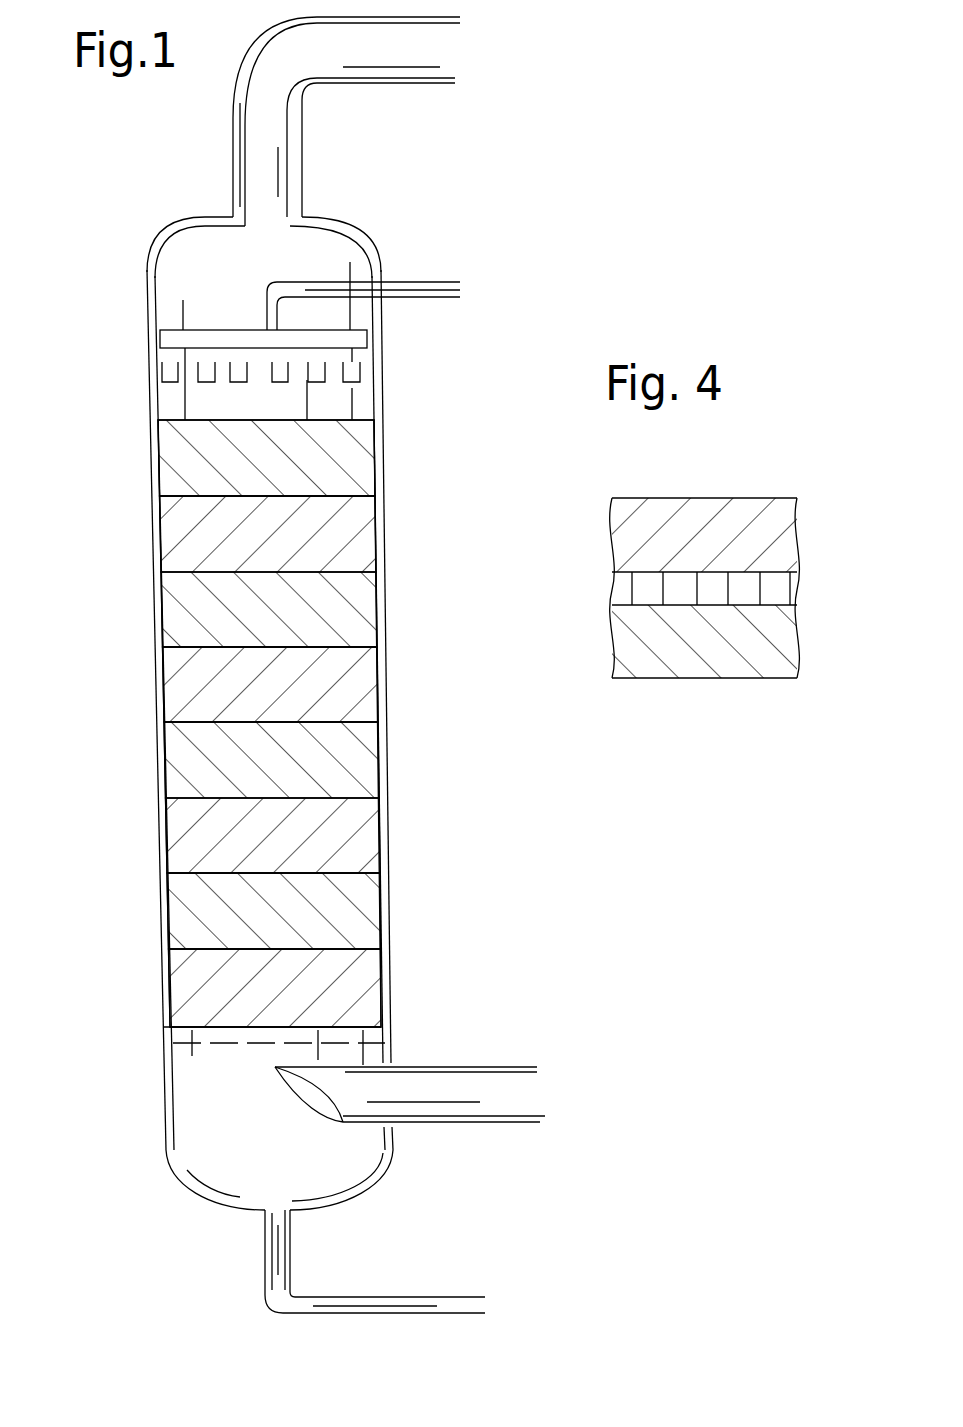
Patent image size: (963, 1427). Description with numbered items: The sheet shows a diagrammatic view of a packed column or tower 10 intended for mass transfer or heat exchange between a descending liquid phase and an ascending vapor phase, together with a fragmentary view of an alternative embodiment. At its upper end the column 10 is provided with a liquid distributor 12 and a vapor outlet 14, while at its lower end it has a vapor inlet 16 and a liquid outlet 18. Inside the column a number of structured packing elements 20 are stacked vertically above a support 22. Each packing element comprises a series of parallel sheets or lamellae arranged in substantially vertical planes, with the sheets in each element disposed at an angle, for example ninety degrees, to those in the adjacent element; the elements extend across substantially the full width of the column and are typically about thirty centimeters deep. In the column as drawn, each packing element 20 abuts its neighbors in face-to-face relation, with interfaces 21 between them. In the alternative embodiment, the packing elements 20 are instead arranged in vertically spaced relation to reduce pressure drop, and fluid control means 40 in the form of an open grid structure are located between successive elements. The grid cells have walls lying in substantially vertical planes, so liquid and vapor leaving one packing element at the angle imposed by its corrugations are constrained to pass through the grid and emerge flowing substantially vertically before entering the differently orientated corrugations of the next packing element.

In FIG. 1, the packed column 10 is at (387, 594).
In FIG. 1, the liquid distributor 12 is at (307, 257).
In FIG. 1, the vapor outlet 14 is at (305, 150).
In FIG. 1, the vapor inlet 16 is at (440, 1083).
In FIG. 1, the liquid outlet 18 is at (290, 1255).
In FIG. 1, the structured packing element 20 is at (178, 473).
In FIG. 4, the structured packing element 20 is at (740, 507).
In FIG. 1, the interface 21 is at (348, 497).
In FIG. 1, the support 22 is at (187, 1043).
In FIG. 4, the fluid control means 40 is at (775, 587).